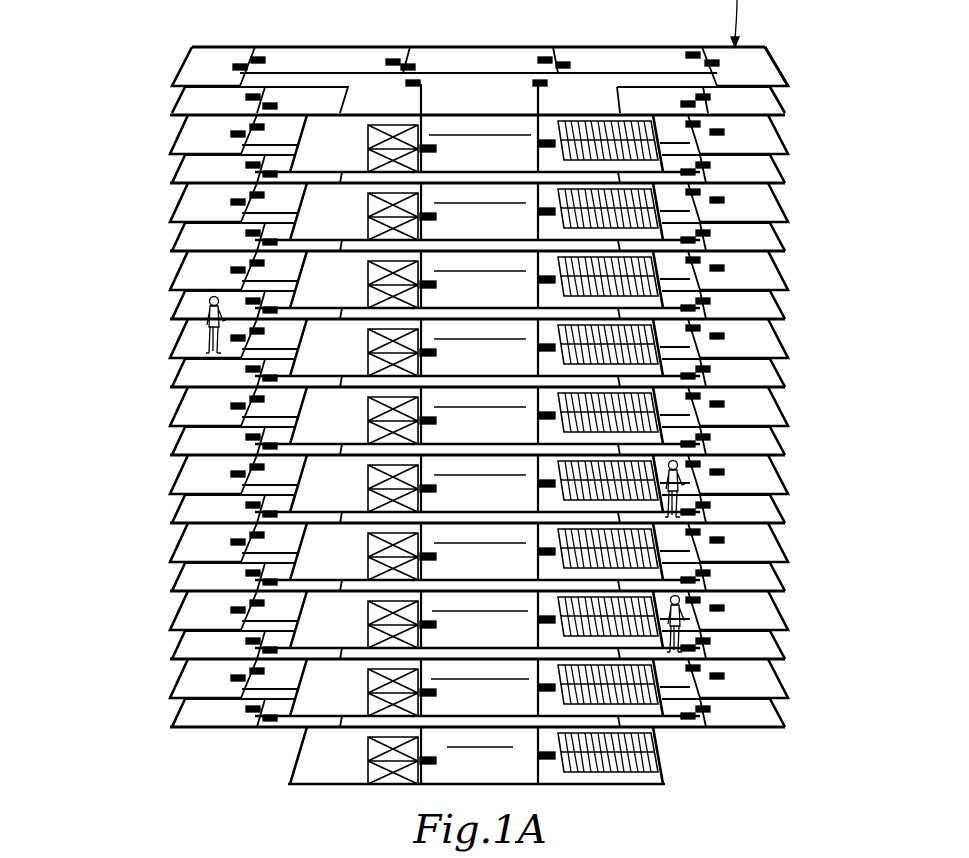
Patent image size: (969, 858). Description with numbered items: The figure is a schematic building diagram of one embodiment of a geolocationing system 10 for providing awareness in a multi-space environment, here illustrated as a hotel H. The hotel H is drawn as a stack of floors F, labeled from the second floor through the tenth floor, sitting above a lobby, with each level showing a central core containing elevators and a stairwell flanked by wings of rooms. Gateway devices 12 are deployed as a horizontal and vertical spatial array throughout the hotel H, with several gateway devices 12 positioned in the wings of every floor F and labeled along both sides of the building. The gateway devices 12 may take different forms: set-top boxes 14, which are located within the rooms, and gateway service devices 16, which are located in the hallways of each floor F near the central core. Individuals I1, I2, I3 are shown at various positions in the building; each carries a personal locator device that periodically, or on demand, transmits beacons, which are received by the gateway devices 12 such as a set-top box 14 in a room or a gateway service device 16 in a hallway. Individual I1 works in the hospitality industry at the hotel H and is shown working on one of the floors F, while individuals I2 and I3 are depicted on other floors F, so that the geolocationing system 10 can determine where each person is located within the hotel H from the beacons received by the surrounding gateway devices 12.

The geolocationing system 10 is at (100, 110).
The gateway devices 12 is at (263, 106).
The set-top boxes 14 is at (538, 84).
The gateway service devices 16 is at (487, 459).
The hotel H is at (790, 39).
The individual I1 is at (204, 333).
The individual I2 is at (686, 511).
The individual I3 is at (688, 646).
The floors F is at (838, 839).